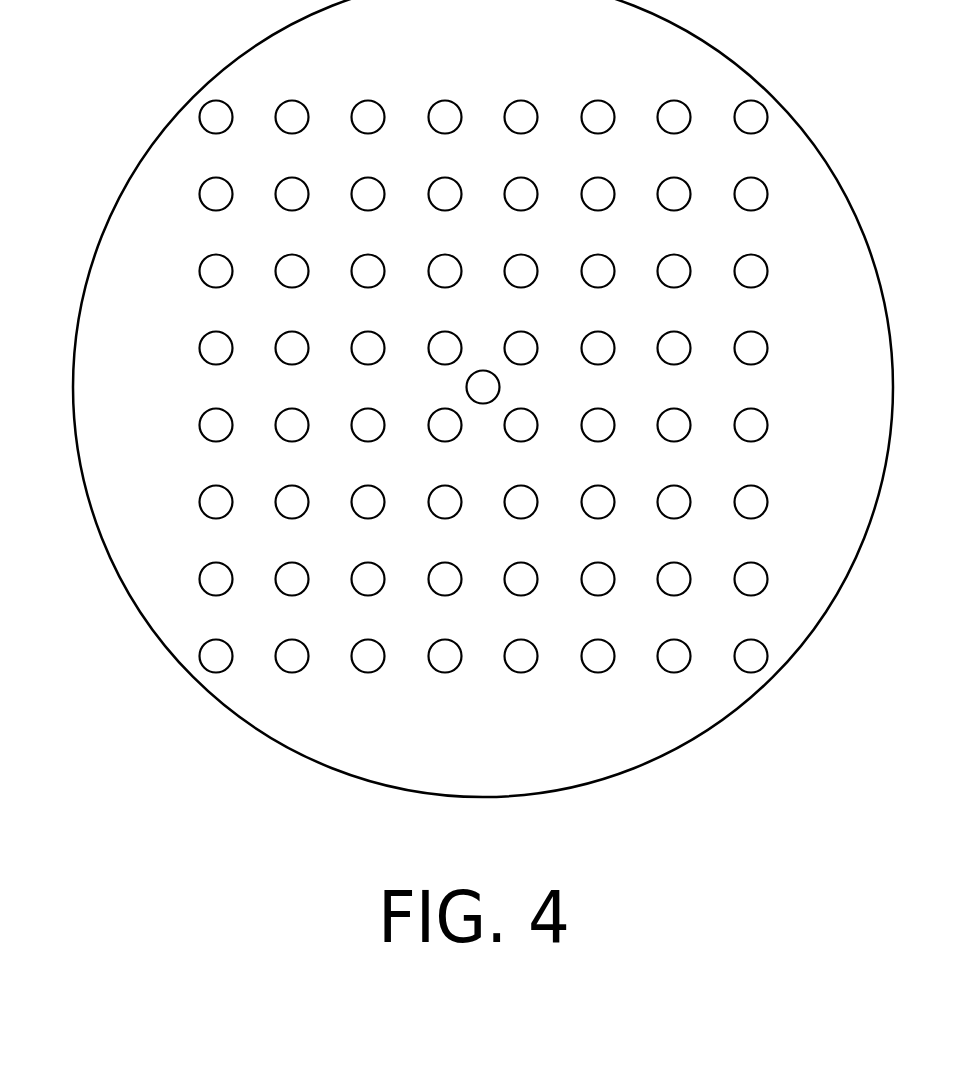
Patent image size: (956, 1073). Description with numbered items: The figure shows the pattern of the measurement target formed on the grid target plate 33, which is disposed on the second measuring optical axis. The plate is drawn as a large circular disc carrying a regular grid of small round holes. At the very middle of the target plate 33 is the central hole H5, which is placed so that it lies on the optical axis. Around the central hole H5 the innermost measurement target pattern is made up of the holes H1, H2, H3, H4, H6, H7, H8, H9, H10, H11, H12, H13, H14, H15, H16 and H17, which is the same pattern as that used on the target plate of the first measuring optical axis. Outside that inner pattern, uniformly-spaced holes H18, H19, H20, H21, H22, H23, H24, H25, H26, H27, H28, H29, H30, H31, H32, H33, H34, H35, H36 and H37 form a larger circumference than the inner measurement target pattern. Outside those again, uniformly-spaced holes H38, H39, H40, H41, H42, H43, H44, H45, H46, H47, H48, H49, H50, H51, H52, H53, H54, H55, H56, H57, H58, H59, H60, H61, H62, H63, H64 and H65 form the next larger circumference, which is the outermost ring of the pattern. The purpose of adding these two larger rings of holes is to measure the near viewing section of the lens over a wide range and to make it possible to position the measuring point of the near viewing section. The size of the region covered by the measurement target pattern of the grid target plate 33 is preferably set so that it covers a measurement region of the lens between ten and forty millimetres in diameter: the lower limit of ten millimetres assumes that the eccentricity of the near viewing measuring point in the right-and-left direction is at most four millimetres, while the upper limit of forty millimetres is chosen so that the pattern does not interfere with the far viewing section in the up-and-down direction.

The target plate 33 is at (143, 153).
The hole H1 is at (445, 348).
The hole H2 is at (521, 348).
The hole H3 is at (445, 425).
The hole H4 is at (521, 425).
The central hole H5 is at (483, 387).
The hole H6 is at (445, 271).
The hole H7 is at (521, 271).
The hole H8 is at (598, 271).
The hole H9 is at (598, 348).
The hole H10 is at (598, 425).
The hole H11 is at (598, 502).
The hole H12 is at (521, 502).
The hole H13 is at (445, 502).
The hole H14 is at (368, 502).
The hole H15 is at (368, 425).
The hole H16 is at (368, 348).
The hole H17 is at (368, 271).
The hole H18 is at (368, 194).
The hole H19 is at (445, 194).
The hole H20 is at (521, 194).
The hole H21 is at (598, 194).
The hole H22 is at (674, 194).
The hole H23 is at (674, 271).
The hole H24 is at (674, 348).
The hole H25 is at (674, 425).
The hole H26 is at (674, 502).
The hole H27 is at (674, 579).
The hole H28 is at (598, 579).
The hole H29 is at (521, 579).
The hole H30 is at (445, 579).
The hole H31 is at (368, 579).
The hole H32 is at (292, 579).
The hole H33 is at (292, 502).
The hole H34 is at (292, 425).
The hole H35 is at (292, 348).
The hole H36 is at (292, 271).
The hole H37 is at (292, 194).
The hole H38 is at (292, 117).
The hole H39 is at (368, 117).
The hole H40 is at (445, 117).
The hole H41 is at (521, 117).
The hole H42 is at (598, 117).
The hole H43 is at (674, 117).
The hole H44 is at (751, 117).
The hole H45 is at (751, 194).
The hole H46 is at (751, 271).
The hole H47 is at (751, 348).
The hole H48 is at (751, 425).
The hole H49 is at (751, 502).
The hole H50 is at (751, 579).
The hole H51 is at (751, 656).
The hole H52 is at (674, 656).
The hole H53 is at (598, 656).
The hole H54 is at (521, 656).
The hole H55 is at (445, 656).
The hole H56 is at (368, 656).
The hole H57 is at (292, 656).
The hole H58 is at (216, 656).
The hole H59 is at (216, 579).
The hole H60 is at (216, 502).
The hole H61 is at (216, 425).
The hole H62 is at (216, 348).
The hole H63 is at (216, 271).
The hole H64 is at (216, 194).
The hole H65 is at (216, 117).